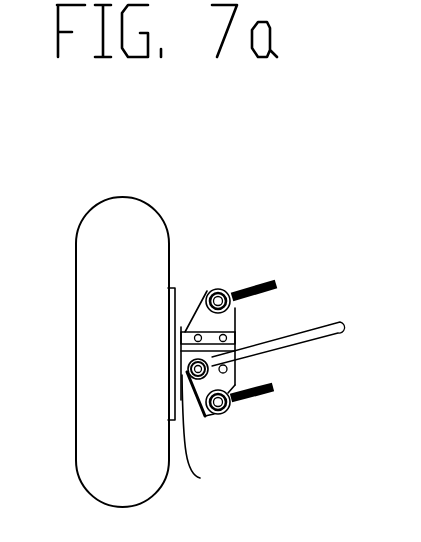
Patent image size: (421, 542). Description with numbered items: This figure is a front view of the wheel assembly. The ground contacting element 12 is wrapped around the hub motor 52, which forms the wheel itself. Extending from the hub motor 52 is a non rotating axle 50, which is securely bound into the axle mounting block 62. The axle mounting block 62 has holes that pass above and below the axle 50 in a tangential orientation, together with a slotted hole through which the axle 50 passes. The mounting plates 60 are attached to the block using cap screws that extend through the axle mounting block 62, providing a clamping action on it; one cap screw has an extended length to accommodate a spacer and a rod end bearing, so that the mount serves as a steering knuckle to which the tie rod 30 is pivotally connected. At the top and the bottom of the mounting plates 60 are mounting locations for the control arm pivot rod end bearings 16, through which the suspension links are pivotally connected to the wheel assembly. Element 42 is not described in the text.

The ground contacting element 12 is at (151, 259).
The hub motor 52 is at (176, 287).
The rod end bearing 16 is at (276, 283).
The mounting plate 60 is at (236, 314).
The non rotating axle 50 is at (239, 351).
The axle mounting block 62 is at (228, 370).
The tie rod 30 is at (344, 333).
The cable guide 42 is at (200, 478).